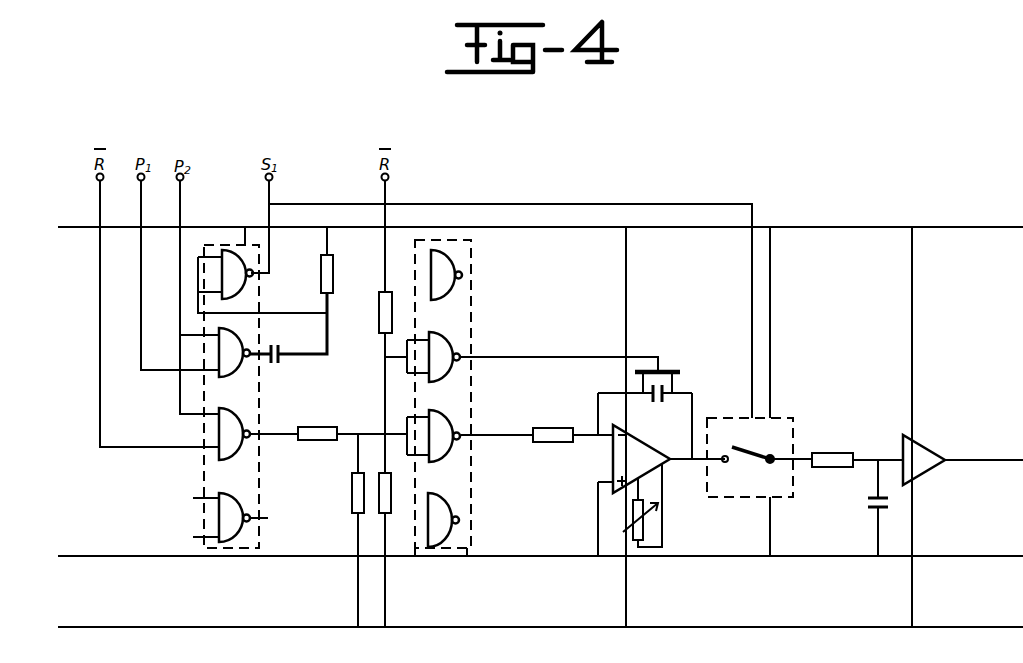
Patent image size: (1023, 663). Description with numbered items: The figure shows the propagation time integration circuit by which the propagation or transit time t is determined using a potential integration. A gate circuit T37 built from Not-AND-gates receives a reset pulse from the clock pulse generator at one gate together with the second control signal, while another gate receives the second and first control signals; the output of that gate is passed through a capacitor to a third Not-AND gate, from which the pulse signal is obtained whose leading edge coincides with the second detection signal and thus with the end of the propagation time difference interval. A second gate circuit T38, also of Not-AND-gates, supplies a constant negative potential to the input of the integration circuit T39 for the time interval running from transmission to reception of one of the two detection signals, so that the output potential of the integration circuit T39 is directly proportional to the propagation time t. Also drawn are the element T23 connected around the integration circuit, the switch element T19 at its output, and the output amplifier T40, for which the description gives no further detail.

The gate circuit T37 is at (231, 396).
The second gate circuit T38 is at (443, 398).
The integration circuit T39 is at (650, 474).
The buffer amplifier T40 is at (963, 466).
The capacitor / transistor element T23 is at (648, 375).
The analog switch (1/4 T19) T19 is at (759, 391).